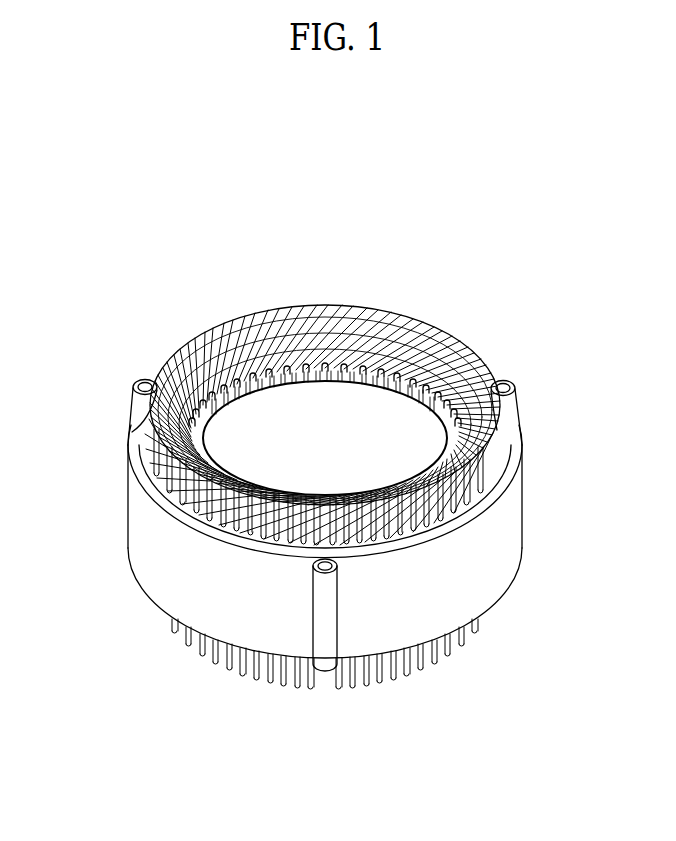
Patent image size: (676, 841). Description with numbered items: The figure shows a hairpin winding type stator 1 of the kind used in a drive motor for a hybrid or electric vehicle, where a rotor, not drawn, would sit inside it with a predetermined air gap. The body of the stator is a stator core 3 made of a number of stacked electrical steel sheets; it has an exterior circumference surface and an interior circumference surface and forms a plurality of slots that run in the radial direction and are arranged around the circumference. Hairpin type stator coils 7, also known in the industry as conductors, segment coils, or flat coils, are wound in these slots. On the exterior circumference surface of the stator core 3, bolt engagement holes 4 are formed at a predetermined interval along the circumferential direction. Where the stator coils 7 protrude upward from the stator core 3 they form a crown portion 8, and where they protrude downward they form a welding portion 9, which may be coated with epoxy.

The hairpin winding type stator 1 is at (215, 260).
The stator core 3 is at (143, 527).
The bolt engagement holes 4 is at (140, 379).
The hairpin type stator coils 7 is at (419, 314).
The crown portion 8 is at (478, 362).
The welding portion 9 is at (405, 670).